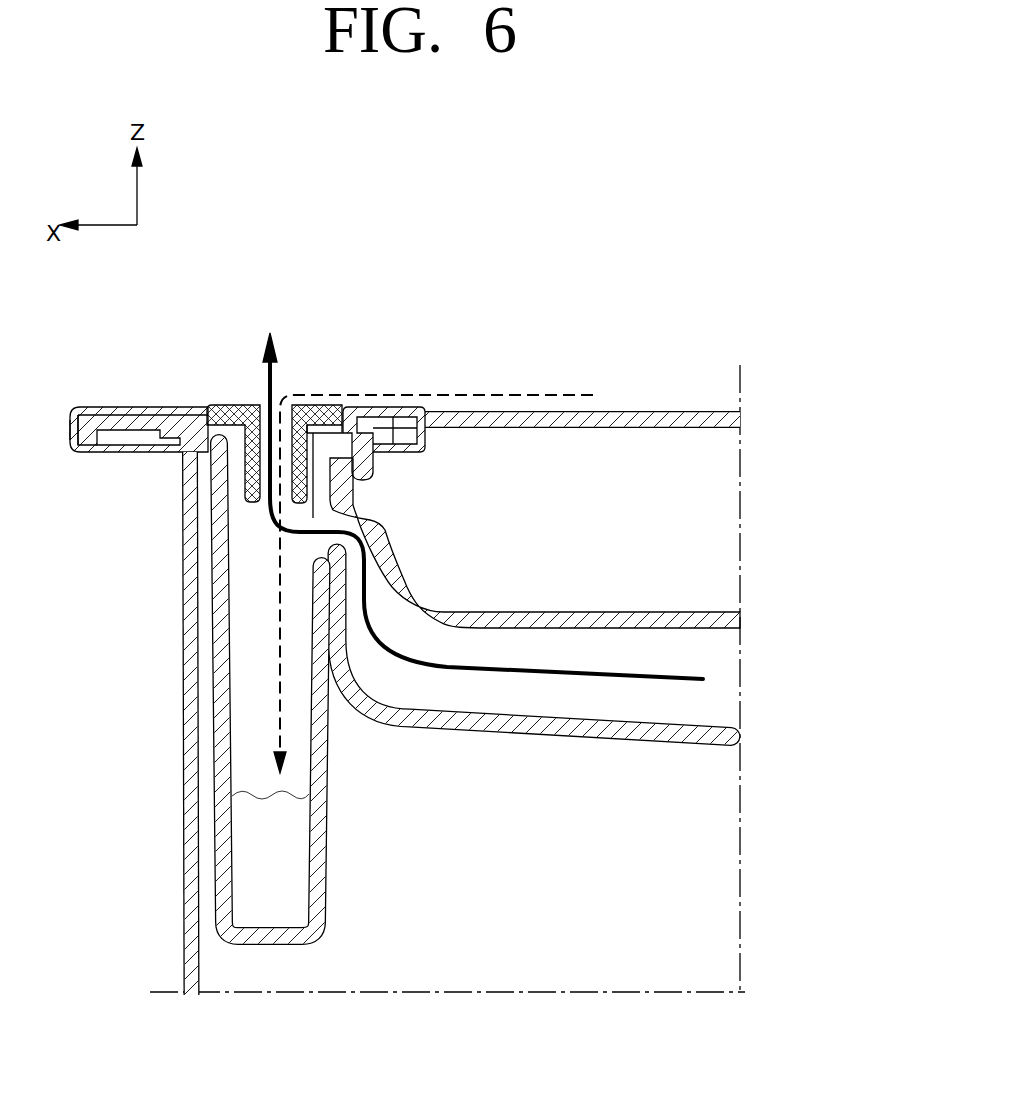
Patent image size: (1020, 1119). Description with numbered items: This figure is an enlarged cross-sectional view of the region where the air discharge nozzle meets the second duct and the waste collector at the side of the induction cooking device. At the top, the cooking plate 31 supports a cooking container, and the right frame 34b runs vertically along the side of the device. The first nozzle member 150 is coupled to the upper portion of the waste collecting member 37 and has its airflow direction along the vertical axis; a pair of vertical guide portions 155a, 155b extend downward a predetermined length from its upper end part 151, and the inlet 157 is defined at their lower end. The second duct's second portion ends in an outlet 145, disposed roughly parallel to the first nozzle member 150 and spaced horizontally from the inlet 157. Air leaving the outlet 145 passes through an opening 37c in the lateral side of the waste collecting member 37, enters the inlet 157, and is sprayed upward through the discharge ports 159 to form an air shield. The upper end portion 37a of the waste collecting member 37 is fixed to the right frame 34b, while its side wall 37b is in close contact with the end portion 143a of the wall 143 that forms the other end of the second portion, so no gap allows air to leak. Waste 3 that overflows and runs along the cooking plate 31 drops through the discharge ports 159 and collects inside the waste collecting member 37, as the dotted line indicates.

The waste 3 is at (247, 877).
The cooking plate 31 is at (648, 413).
The right frame 34b is at (123, 408).
The waste collecting member 37 is at (220, 722).
The upper end portion 37a is at (90, 423).
The side wall 37b is at (317, 585).
The opening 37c is at (303, 538).
The wall 143 is at (700, 617).
The end portion 143a is at (338, 580).
The outlet 145 is at (318, 520).
The first nozzle member 150 is at (225, 397).
The upper end part 151 is at (299, 417).
The vertical guide portion 155a is at (250, 485).
The vertical guide portion 155b is at (297, 480).
The inlet 157 is at (267, 527).
The discharge port 159 is at (267, 407).